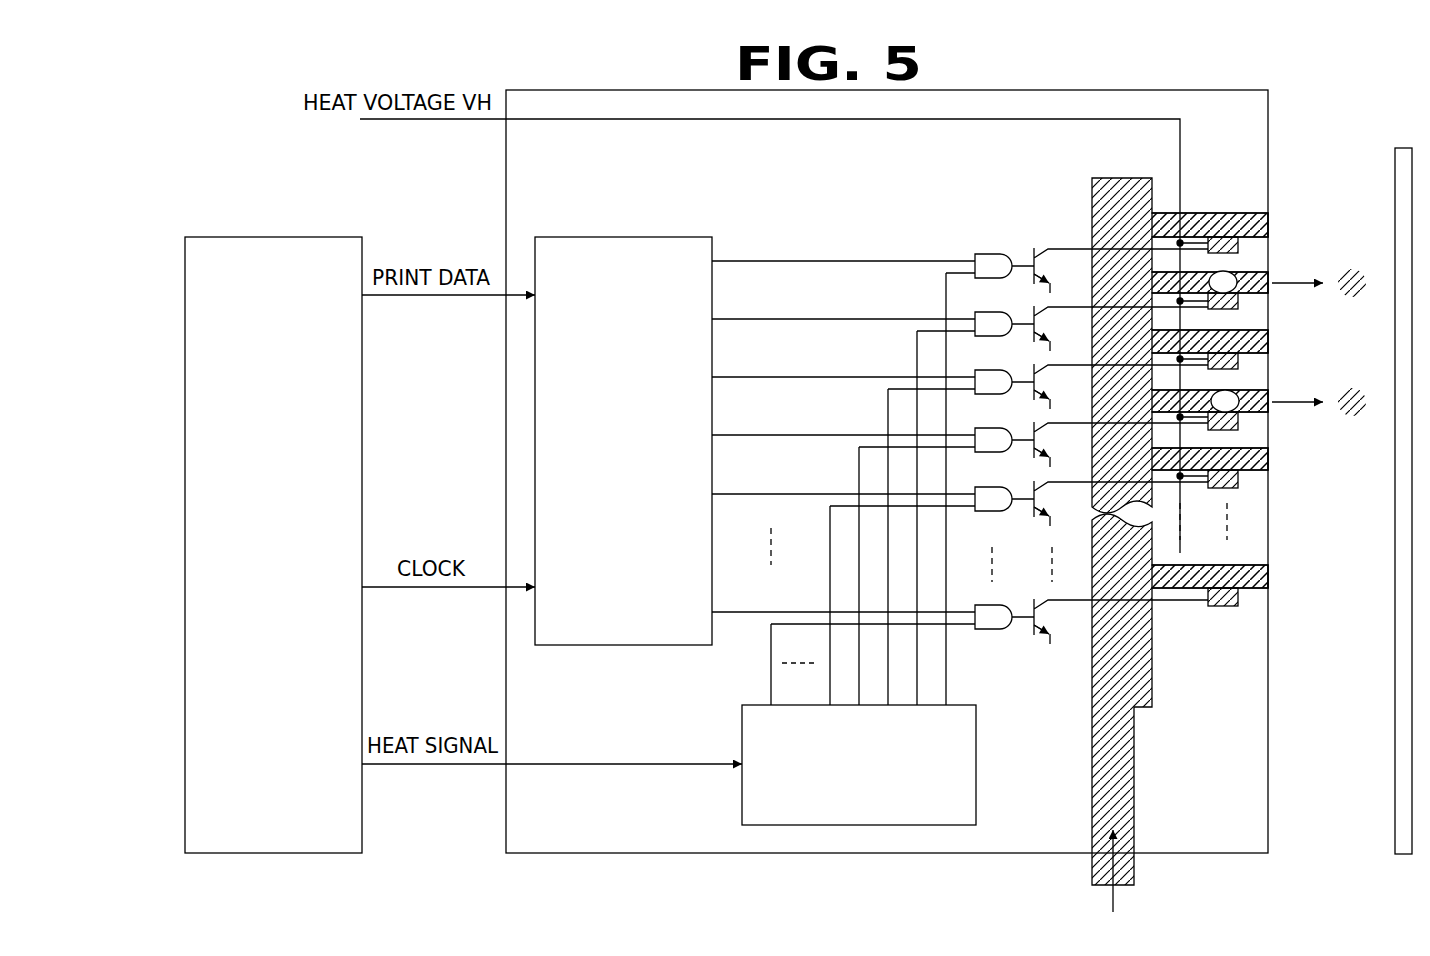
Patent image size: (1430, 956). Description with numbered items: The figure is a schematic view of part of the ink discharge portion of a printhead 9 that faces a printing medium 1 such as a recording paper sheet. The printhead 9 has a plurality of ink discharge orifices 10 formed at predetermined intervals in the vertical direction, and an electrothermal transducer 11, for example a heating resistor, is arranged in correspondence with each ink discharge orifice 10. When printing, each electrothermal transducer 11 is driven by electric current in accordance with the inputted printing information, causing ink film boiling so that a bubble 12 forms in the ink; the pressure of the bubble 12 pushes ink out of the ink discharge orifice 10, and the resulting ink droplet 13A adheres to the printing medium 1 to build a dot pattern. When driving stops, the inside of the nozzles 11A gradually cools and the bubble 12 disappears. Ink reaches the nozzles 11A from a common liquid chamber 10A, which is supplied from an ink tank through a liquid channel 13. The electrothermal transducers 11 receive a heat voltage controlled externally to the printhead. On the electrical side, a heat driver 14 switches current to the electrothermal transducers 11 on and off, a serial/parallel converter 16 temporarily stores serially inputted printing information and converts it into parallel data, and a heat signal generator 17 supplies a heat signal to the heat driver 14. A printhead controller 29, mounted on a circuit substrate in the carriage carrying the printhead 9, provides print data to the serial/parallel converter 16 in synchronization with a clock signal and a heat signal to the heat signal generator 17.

The printing medium 1 is at (1401, 148).
The printhead 9 is at (1207, 90).
The ink discharge orifice 10 is at (1268, 466).
The common liquid chamber 10A is at (1121, 178).
The electrothermal transducer 11 is at (1268, 240).
The nozzle 11A is at (1219, 213).
The bubble 12 is at (1232, 278).
The liquid channel 13 is at (1115, 793).
The ink droplet 13A is at (1354, 390).
The heat driver 14 is at (1034, 248).
The serial/parallel converter 16 is at (622, 237).
The heat signal generator 17 is at (976, 757).
The printhead controller 29 is at (272, 237).